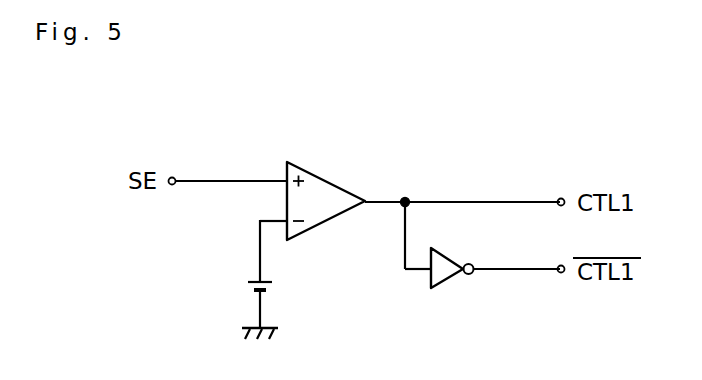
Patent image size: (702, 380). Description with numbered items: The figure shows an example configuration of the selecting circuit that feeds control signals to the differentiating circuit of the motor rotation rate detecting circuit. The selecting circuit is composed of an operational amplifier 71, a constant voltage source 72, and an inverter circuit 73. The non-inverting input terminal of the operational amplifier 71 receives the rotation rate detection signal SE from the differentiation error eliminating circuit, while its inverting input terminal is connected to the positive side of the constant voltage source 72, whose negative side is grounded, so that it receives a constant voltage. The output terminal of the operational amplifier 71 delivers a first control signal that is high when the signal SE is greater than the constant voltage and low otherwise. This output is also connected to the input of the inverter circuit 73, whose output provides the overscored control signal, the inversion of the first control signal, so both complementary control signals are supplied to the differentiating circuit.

The operational amplifier 71 is at (326, 176).
The constant voltage source 72 is at (292, 272).
The inverter circuit 73 is at (455, 290).